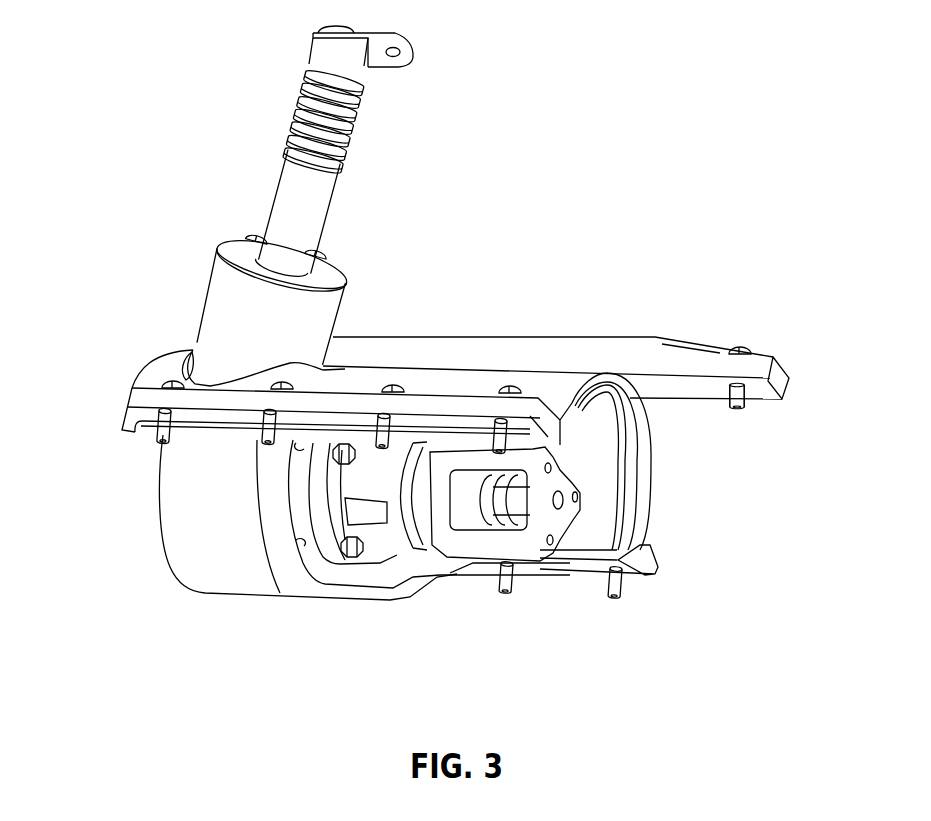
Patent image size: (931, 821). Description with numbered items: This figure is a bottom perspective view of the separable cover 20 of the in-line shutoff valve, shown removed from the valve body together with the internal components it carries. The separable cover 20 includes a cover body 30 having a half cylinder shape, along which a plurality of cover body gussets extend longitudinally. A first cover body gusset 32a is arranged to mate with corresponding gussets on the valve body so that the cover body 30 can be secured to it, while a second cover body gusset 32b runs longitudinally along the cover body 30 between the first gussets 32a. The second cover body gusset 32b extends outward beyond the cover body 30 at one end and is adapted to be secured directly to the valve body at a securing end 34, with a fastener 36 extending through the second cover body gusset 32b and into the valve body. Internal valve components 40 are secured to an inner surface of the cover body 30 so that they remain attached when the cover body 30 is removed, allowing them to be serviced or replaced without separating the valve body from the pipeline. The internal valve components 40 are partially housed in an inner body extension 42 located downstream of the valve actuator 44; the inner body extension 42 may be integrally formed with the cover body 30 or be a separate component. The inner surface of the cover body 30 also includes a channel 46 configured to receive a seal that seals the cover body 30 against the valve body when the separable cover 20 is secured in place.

The separable cover 20 is at (553, 378).
The cover body 30 is at (408, 377).
The first cover body gusset 32a is at (132, 393).
The second cover body gusset 32b is at (688, 343).
The securing end 34 is at (783, 370).
The fastener 36 is at (736, 408).
The internal valve components 40 is at (432, 606).
The inner body extension 42 is at (230, 563).
The valve actuator 44 is at (507, 533).
The channel 46 is at (187, 425).